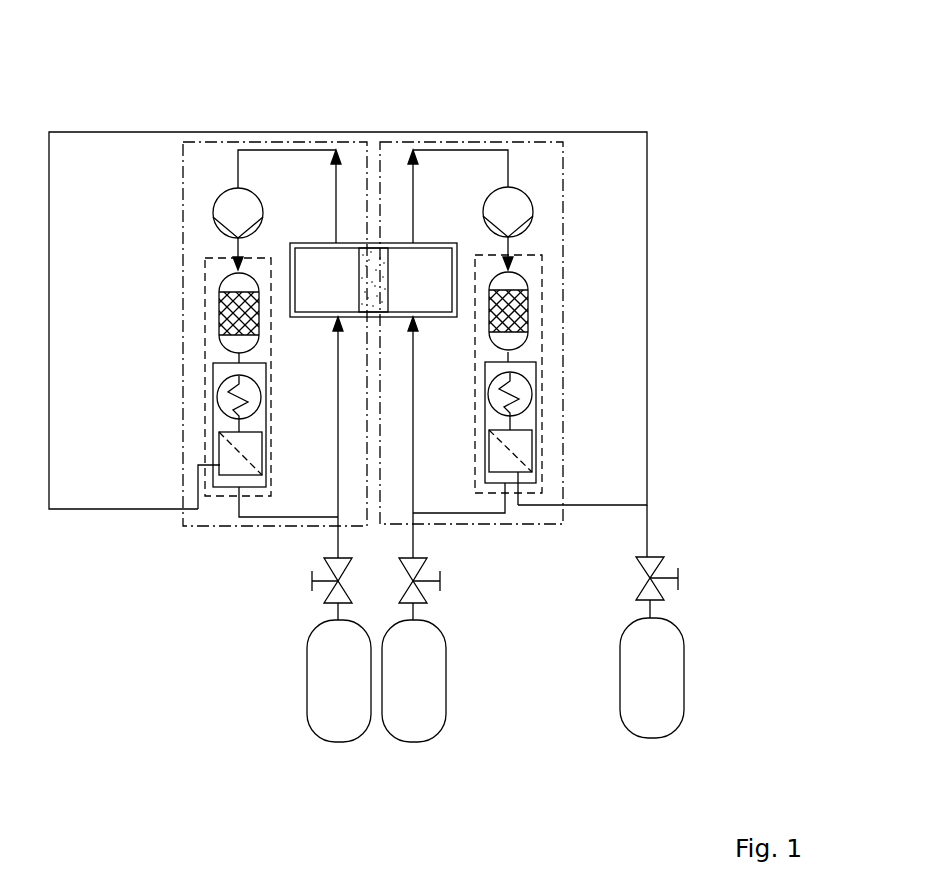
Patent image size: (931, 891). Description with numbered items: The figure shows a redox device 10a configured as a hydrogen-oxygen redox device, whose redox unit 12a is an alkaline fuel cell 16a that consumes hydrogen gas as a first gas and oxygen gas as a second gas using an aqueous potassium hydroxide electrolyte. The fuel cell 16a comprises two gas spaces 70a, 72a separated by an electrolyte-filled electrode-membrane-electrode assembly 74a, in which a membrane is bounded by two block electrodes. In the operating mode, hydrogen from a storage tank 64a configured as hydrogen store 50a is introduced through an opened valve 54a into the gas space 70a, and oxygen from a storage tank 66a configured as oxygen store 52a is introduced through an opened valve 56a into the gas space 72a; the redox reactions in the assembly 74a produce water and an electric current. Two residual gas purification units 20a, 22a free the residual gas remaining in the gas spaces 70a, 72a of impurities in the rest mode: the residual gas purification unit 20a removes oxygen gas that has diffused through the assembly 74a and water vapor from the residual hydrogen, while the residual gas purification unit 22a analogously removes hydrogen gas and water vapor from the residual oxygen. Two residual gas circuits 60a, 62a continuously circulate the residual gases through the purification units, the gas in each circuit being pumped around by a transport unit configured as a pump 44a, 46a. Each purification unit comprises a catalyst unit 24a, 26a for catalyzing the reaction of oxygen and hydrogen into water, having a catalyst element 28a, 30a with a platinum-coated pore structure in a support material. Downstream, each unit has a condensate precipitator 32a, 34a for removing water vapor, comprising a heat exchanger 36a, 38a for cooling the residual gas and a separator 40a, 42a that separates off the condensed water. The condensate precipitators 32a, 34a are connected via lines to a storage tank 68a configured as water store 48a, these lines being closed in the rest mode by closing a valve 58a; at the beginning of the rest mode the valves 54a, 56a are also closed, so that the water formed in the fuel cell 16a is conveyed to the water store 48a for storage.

The redox device 10a is at (148, 112).
The redox unit 12a is at (373, 171).
The alkaline fuel cell 16a is at (350, 258).
The residual gas purification unit 20a is at (169, 435).
The residual gas purification unit 22a is at (542, 265).
The catalyst unit 24a is at (175, 370).
The catalyst unit 26a is at (553, 307).
The catalyst element 28a is at (222, 332).
The catalyst element 30a is at (525, 325).
The condensate precipitator 32a is at (225, 425).
The condensate precipitator 34a is at (561, 428).
The heat exchanger 36a is at (222, 392).
The heat exchanger 38a is at (522, 397).
The separator 40a is at (212, 450).
The separator 42a is at (520, 450).
The pump 44a is at (237, 210).
The pump 46a is at (520, 205).
The water store 48a is at (714, 708).
The hydrogen store 50a is at (295, 710).
The oxygen store 52a is at (480, 710).
The valve 54a is at (335, 583).
The valve 56a is at (416, 583).
The valve 58a is at (653, 580).
The residual gas circuit 60a is at (183, 223).
The residual gas circuit 62a is at (563, 206).
The storage tank 64a is at (330, 710).
The storage tank 66a is at (432, 706).
The storage tank 68a is at (668, 708).
The gas space 70a is at (318, 262).
The gas space 72a is at (430, 262).
The electrode-membrane-electrode assembly 74a is at (395, 258).